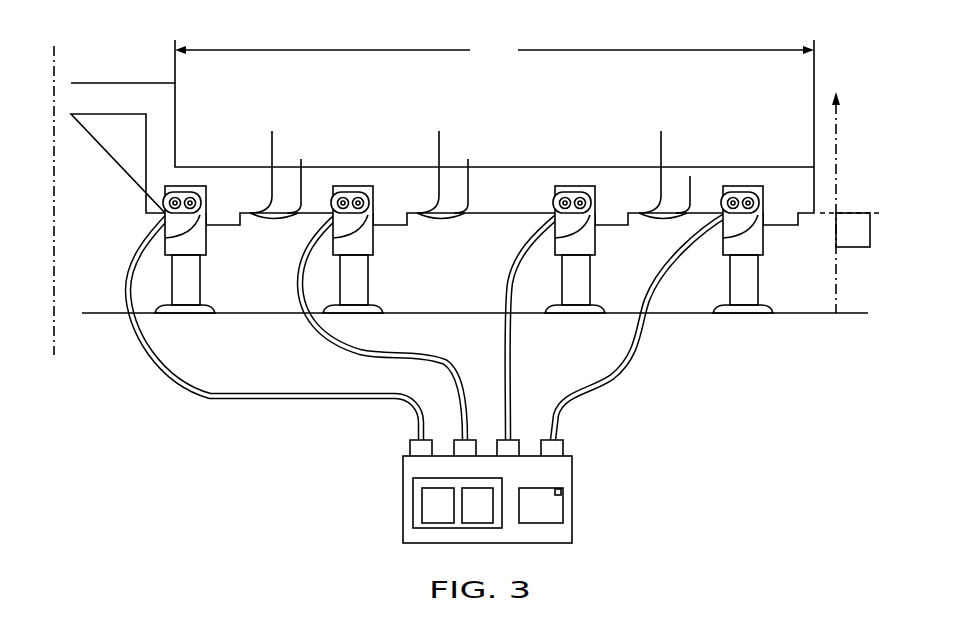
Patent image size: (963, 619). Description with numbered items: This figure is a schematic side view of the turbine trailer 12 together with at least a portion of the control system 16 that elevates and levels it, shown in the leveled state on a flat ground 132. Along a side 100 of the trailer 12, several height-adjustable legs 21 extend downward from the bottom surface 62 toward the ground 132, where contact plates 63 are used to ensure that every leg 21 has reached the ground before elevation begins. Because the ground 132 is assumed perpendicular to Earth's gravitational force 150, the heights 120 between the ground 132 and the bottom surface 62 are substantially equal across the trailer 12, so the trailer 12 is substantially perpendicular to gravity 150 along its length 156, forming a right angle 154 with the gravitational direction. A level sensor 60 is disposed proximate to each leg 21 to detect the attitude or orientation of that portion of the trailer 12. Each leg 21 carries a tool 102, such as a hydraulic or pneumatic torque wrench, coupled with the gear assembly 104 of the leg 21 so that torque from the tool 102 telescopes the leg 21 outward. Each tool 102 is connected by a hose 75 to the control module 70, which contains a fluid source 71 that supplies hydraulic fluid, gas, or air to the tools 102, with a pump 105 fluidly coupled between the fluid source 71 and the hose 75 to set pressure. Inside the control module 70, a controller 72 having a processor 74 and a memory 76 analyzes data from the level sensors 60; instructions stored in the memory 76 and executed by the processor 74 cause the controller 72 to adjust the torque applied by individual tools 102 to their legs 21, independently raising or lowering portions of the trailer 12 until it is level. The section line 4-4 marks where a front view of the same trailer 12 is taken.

The line 4- 4 is at (54, 46).
The turbine trailer 12 is at (337, 94).
The control system 16 is at (315, 442).
The height-adjustable legs 21 is at (217, 188).
The level sensor 60 is at (468, 162).
The bottom surface 62 is at (488, 173).
The contact plates 63 is at (188, 314).
The control module 70 is at (403, 497).
The fluid source 71 is at (563, 508).
The controller 72 is at (457, 479).
The processor 74 is at (437, 523).
The hose 75 is at (208, 395).
The memory 76 is at (479, 523).
The side 100 is at (497, 178).
The tool 102 is at (163, 197).
The gear assembly 104 is at (165, 238).
The pump 105 is at (559, 492).
The heights 120 is at (236, 232).
The ground 132 is at (453, 313).
The gravity 150 is at (837, 176).
The right angle 154 is at (856, 249).
The length 156 is at (494, 102).